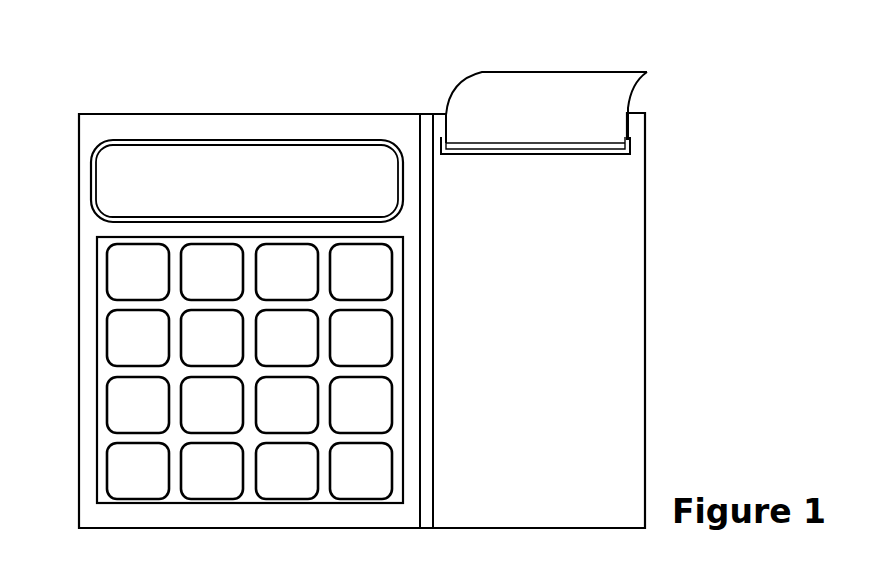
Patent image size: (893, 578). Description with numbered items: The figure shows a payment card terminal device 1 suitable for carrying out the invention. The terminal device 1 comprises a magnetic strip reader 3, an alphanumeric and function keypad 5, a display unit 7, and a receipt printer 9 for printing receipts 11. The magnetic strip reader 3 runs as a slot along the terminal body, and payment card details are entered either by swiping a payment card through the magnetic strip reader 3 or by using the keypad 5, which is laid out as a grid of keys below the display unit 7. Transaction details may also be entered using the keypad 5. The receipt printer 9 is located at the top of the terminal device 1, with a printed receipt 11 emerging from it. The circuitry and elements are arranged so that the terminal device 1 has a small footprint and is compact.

The payment card terminal device 1 is at (701, 128).
The magnetic strip reader 3 is at (430, 131).
The alphanumeric and function keypad 5 is at (110, 354).
The display unit 7 is at (128, 198).
The receipt printer 9 is at (570, 158).
The receipts 11 is at (610, 54).